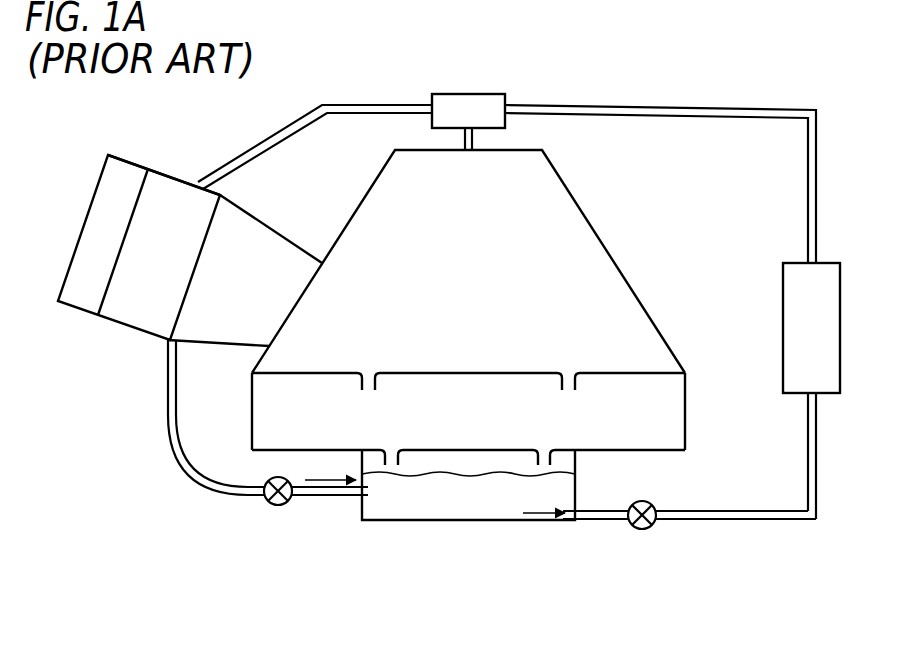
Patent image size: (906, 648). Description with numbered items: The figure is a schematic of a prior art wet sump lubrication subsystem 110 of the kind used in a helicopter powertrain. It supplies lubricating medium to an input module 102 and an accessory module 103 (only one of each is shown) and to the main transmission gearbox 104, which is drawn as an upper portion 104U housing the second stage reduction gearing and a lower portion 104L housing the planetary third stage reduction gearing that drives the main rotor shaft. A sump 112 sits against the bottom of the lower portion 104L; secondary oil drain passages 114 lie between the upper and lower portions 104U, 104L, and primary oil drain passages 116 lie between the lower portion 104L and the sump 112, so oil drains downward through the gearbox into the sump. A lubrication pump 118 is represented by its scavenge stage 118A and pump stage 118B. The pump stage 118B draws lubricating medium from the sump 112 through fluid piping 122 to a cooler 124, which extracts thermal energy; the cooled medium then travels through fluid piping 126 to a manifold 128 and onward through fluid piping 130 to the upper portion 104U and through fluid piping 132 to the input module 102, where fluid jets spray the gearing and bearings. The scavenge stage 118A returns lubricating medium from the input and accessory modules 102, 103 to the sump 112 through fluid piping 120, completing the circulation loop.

The input module 102 is at (125, 328).
The accessory module 103 is at (128, 161).
The main transmission gearbox 104 is at (508, 307).
The upper portion 104U is at (627, 282).
The lower portion 104L is at (686, 406).
The wet sump lubrication subsystem 110 is at (288, 566).
The sump 112 is at (577, 485).
The secondary oil drain passages 114 is at (371, 364).
The primary oil drain passages 116 is at (401, 441).
The lubrication pump 118 is at (518, 582).
The scavenge stage 118A is at (290, 503).
The pump stage 118B is at (632, 526).
The fluid piping 120 is at (190, 468).
The fluid piping 122 is at (726, 521).
The cooler 124 is at (811, 328).
The fluid piping 126 is at (683, 108).
The manifold 128 is at (468, 111).
The fluid piping 130 is at (474, 140).
The fluid piping 132 is at (373, 104).